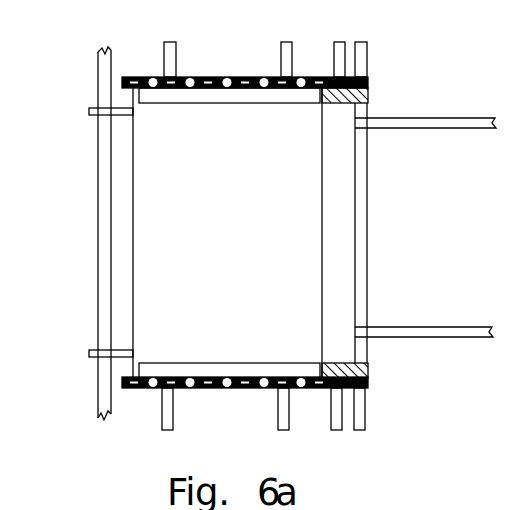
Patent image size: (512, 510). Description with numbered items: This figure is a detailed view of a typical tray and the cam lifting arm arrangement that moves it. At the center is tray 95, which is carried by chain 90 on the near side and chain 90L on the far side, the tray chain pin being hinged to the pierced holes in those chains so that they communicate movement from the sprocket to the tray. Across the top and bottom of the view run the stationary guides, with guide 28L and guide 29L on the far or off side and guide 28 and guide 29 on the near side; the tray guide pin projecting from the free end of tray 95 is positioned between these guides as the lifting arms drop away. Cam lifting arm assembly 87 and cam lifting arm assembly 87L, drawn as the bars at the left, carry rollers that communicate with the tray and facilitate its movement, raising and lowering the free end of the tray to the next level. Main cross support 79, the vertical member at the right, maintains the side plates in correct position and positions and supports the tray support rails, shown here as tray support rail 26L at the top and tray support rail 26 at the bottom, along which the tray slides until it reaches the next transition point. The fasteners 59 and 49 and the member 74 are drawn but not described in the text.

The tray 95 is at (227, 233).
The support rods 74 is at (97, 410).
The cam lifting arm assembly 87L is at (91, 109).
The cam lifting arm assembly 87 is at (90, 356).
The stationary guide 28L is at (258, 77).
The stationary guide 28 is at (262, 389).
The stationary guide 29L is at (369, 90).
The tray guide 29 is at (346, 359).
The main cross support 79 is at (359, 228).
The tray support rail 26L is at (469, 121).
The tray support rail 26 is at (468, 333).
The bolts 59 is at (167, 56).
The bolts 49 is at (342, 55).
The chain 90L is at (358, 79).
The chain 90 is at (366, 389).